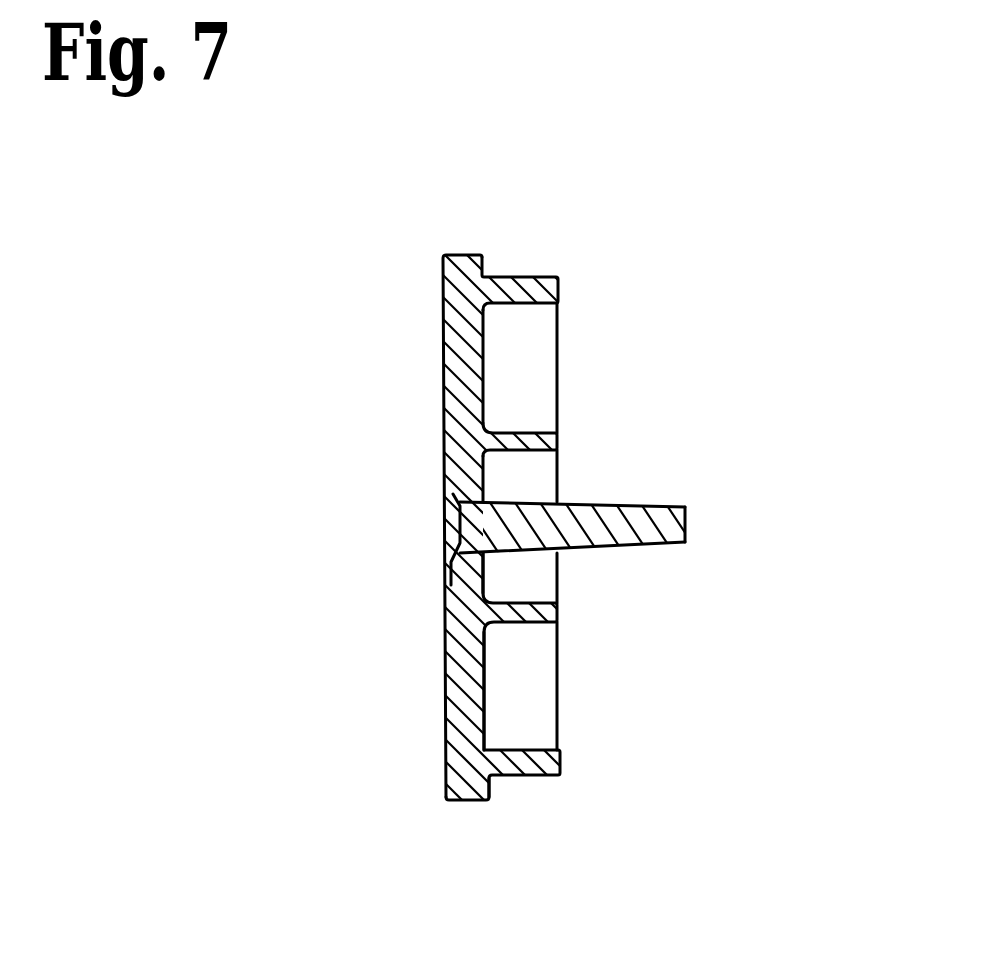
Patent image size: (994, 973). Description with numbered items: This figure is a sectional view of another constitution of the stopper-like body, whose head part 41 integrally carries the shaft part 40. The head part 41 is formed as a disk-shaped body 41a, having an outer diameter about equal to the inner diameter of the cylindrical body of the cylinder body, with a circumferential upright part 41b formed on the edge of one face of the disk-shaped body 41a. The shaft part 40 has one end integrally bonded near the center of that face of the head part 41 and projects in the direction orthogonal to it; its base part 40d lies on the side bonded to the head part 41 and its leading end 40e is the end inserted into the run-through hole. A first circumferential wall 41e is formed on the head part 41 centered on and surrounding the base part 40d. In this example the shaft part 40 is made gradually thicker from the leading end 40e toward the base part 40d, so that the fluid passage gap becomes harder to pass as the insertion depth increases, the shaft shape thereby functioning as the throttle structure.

The shaft part 40 is at (633, 510).
The base part 40d is at (467, 532).
The leading end 40e is at (687, 530).
The head part 41 is at (443, 343).
The disk-shaped body 41a is at (455, 434).
The circumferential upright part 41b is at (522, 277).
The first circumferential wall 41e is at (527, 430).